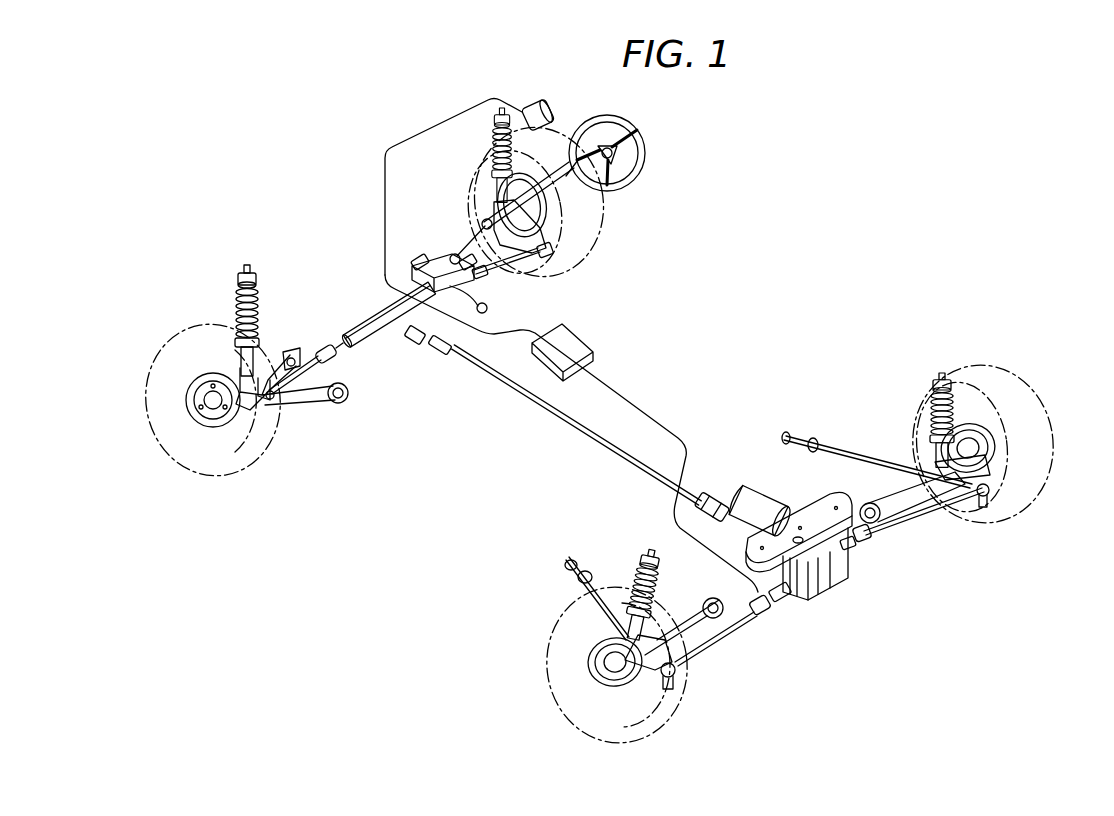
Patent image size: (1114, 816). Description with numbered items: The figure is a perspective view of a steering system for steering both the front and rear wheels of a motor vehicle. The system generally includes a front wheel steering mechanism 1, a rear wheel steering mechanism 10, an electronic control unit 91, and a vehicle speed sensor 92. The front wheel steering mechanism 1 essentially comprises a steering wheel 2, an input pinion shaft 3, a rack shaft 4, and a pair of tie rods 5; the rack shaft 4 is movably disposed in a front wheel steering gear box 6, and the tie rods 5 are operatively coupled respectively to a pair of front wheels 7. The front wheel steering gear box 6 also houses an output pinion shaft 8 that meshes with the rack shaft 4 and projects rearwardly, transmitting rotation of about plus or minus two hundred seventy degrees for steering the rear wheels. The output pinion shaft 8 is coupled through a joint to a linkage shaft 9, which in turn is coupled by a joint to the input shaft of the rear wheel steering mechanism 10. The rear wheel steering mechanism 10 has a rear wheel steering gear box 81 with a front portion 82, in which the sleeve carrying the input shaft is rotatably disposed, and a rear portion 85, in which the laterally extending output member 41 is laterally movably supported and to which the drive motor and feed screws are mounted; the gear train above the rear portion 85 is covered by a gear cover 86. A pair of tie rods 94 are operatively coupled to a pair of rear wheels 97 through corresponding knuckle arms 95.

The front wheel steering mechanism 1 is at (345, 227).
The steering wheel 2 is at (630, 124).
The input pinion shaft 3 is at (448, 258).
The rack shaft 4 is at (333, 343).
The tie rods 5 is at (310, 363).
The front wheel steering gear box 6 is at (377, 322).
The front wheels 7 is at (160, 430).
The output pinion shaft 8 is at (418, 337).
The linkage shaft 9 is at (583, 437).
The rear wheel steering mechanism 10 is at (809, 548).
The output member 41 is at (778, 593).
The rear wheel steering gear box 81 is at (742, 478).
The front portion of the rear wheel steering gear box 82 is at (735, 498).
The rear portion of the rear wheel steering gear box 85 is at (805, 597).
The gear cover 86 is at (813, 510).
The electronic control unit 91 is at (580, 347).
The vehicle speed sensor 92 is at (538, 104).
The tie rods 94 is at (737, 630).
The knuckle arms 95 is at (662, 688).
The rear wheels 97 is at (1020, 388).